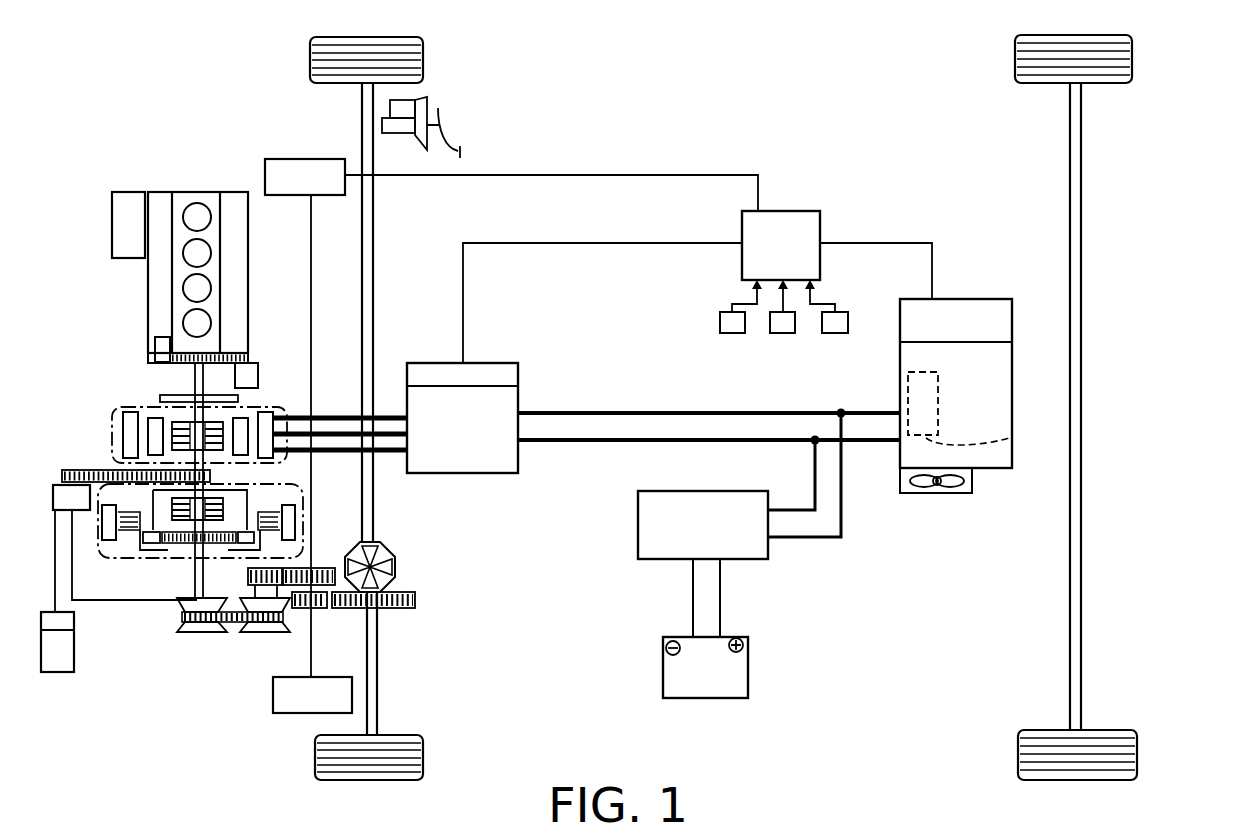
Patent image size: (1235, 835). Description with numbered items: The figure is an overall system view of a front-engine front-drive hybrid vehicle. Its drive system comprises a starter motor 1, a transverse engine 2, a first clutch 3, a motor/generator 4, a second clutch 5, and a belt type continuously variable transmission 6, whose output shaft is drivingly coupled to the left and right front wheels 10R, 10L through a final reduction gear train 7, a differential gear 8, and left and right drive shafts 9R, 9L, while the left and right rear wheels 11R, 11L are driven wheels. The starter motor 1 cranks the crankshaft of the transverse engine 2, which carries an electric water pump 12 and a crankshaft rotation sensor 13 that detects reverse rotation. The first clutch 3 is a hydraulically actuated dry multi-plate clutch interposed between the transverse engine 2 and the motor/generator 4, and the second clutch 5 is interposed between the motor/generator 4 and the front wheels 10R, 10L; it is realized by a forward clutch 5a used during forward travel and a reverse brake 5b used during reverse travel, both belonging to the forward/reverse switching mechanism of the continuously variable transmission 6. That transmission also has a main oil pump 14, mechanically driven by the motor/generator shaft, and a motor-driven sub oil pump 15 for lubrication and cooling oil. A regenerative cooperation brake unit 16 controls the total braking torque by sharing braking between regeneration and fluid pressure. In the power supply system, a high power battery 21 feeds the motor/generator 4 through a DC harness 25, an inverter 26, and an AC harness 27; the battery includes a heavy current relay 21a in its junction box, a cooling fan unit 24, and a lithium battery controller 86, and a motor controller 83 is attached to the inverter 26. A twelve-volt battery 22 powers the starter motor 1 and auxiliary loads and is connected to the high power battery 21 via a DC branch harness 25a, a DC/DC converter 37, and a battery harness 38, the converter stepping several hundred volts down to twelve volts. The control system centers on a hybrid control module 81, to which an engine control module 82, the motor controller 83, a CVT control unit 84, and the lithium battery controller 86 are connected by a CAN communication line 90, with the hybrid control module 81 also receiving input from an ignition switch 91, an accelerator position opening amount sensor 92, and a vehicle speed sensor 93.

The starter motor 1 is at (248, 378).
The transverse engine 2 is at (215, 200).
The first clutch 3 is at (185, 432).
The motor/generator 4 is at (130, 435).
The second clutch 5 is at (106, 545).
The forward clutch 5a is at (213, 505).
The reverse brake 5b is at (133, 540).
The belt type continuously variable transmission 6 is at (200, 625).
The final reduction gear train 7 is at (326, 609).
The differential gear 8 is at (385, 557).
The right drive shaft 9R is at (376, 208).
The left drive shaft 9L is at (379, 690).
The right front wheel 10R is at (311, 60).
The left front wheel 10L is at (316, 752).
The right rear wheel 11R is at (1133, 52).
The left rear wheel 11L is at (1138, 750).
The electric water pump 12 is at (123, 198).
The crankshaft rotation sensor 13 is at (155, 347).
The main oil pump 14 is at (62, 497).
The sub oil pump 15 is at (58, 652).
The regenerative cooperation brake unit 16 is at (421, 108).
The high power battery 21 is at (983, 345).
The heavy current relay 21a is at (1014, 438).
The 12V battery 22 is at (677, 688).
The cooling fan unit 24 is at (938, 485).
The DC harness 25 is at (583, 440).
The DC branch harness 25a is at (818, 487).
The inverter 26 is at (459, 426).
The AC harness 27 is at (344, 416).
The DC/DC converter 37 is at (638, 548).
The battery harness 38 is at (695, 594).
The hybrid control module 81 is at (781, 211).
The engine control module 82 is at (278, 159).
The motor controller 83 is at (431, 363).
The CVT control unit 84 is at (273, 702).
The lithium battery controller 86 is at (1000, 318).
The CAN communication line 90 is at (710, 243).
The ignition switch 91 is at (732, 334).
The accelerator position opening amount sensor 92 is at (782, 334).
The vehicle speed sensor 93 is at (833, 334).